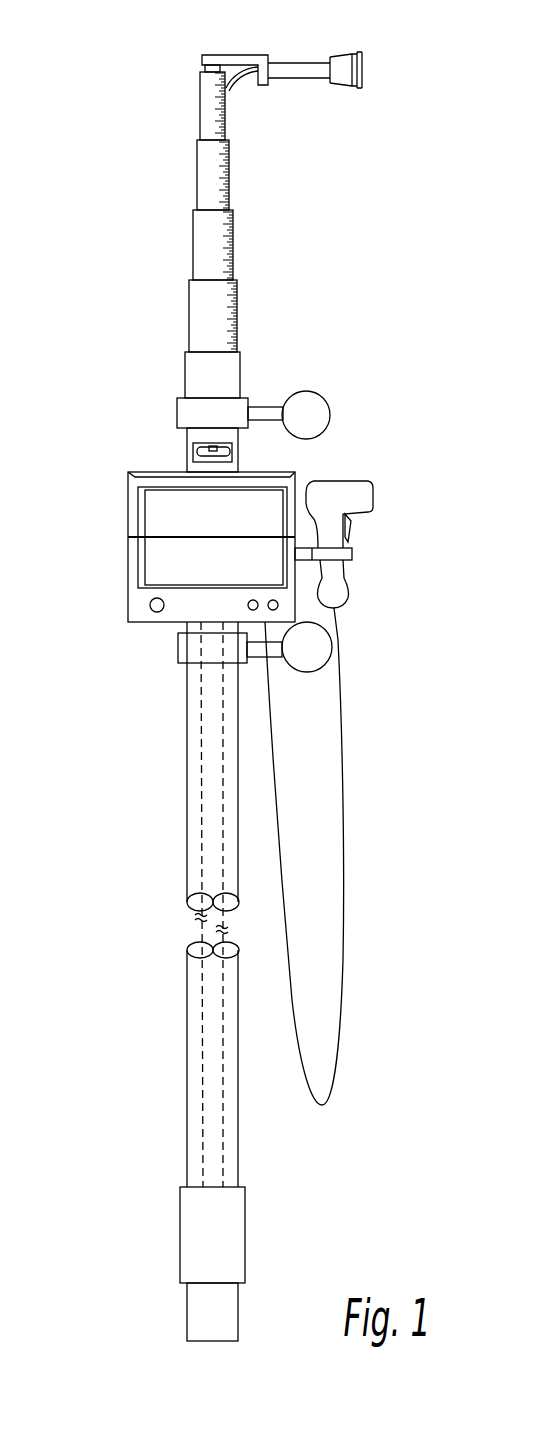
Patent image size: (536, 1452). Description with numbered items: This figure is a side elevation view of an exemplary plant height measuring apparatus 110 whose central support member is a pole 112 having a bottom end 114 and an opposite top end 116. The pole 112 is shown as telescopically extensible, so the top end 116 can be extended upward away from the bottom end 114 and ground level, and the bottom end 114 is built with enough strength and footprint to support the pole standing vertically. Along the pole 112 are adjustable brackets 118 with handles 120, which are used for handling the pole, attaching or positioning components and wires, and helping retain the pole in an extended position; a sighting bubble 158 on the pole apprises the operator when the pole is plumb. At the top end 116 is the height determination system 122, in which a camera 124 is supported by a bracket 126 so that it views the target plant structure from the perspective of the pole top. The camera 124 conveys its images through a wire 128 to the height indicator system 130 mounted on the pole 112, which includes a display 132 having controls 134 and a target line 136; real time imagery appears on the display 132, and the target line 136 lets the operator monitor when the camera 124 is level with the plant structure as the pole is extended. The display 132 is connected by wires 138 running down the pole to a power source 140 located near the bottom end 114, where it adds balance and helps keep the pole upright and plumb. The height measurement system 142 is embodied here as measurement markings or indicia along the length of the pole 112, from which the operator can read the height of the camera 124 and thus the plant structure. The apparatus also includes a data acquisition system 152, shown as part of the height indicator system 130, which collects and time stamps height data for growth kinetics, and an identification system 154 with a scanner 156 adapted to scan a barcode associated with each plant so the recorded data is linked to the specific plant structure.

The apparatus 110 is at (290, 23).
The pole 112 is at (195, 737).
The bottom end 114 is at (197, 1342).
The top end 116 is at (205, 68).
The bracket 118 is at (183, 408).
The handle 120 is at (317, 400).
The height determination system 122 is at (362, 27).
The camera 124 is at (345, 80).
The bracket 126 is at (263, 85).
The wire 128 is at (240, 78).
The height indicator system 130 is at (360, 439).
The display 132 is at (135, 562).
The controls 134 is at (152, 604).
The target line 136 is at (165, 532).
The wires 138 is at (225, 751).
The power source 140 is at (197, 1218).
The height measurement system 142 is at (228, 177).
The data acquisition system 152 is at (99, 478).
The identification system 154 is at (402, 485).
The scanner 156 is at (337, 537).
The sighting bubble 158 is at (198, 444).